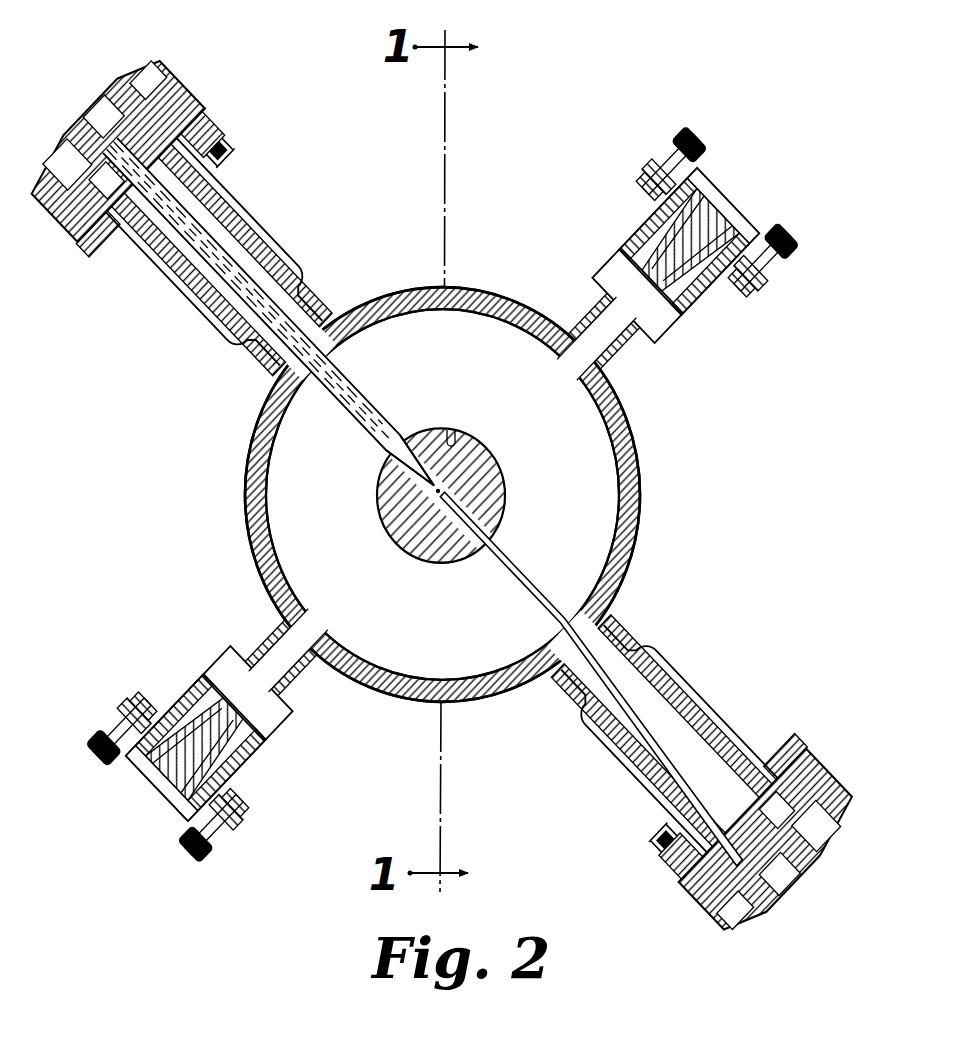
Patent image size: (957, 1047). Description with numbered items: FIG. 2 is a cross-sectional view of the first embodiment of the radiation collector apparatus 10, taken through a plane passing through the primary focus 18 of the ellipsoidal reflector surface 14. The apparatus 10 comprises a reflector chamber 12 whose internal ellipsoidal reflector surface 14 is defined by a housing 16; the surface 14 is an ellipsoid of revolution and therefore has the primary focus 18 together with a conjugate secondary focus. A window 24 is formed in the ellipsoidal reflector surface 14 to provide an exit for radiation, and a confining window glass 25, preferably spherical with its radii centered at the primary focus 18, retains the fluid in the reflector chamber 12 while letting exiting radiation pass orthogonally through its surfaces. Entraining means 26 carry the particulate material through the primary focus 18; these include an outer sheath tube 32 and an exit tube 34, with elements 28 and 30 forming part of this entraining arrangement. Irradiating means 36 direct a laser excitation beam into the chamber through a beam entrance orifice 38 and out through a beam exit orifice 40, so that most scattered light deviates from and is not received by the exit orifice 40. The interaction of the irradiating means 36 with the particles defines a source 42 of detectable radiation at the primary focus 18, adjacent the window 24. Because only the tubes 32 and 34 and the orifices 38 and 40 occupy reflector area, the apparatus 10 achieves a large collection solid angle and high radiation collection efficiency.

The radiation collector apparatus 10 is at (462, 283).
The reflector chamber 12 is at (292, 478).
The ellipsoidal reflector surface 14 is at (407, 322).
The housing 16 is at (624, 470).
The primary focus 18 is at (446, 490).
The window 24 is at (449, 430).
The window glass 25 is at (464, 450).
The entraining means 26 is at (259, 240).
The passage through ball 28 is at (438, 493).
The tube 30 is at (366, 409).
The outer sheath tube 32 is at (380, 425).
The exit tube 34 is at (523, 575).
The irradiating means 36 is at (632, 243).
The beam entrance orifice 38 is at (573, 356).
The beam exit orifice 40 is at (306, 633).
The source of detectable radiation 42 is at (437, 491).